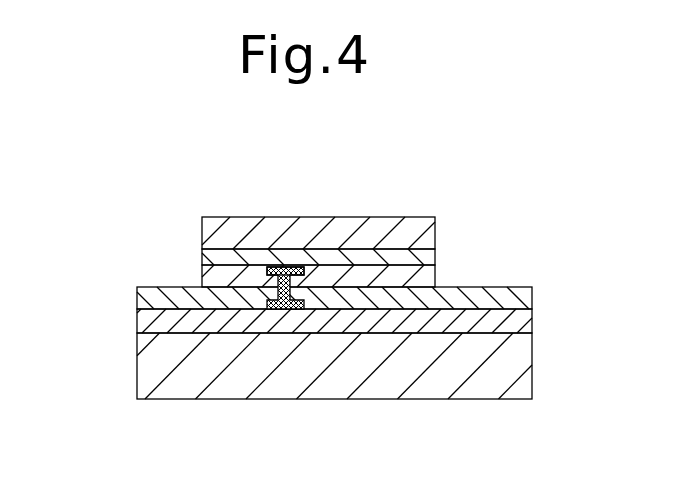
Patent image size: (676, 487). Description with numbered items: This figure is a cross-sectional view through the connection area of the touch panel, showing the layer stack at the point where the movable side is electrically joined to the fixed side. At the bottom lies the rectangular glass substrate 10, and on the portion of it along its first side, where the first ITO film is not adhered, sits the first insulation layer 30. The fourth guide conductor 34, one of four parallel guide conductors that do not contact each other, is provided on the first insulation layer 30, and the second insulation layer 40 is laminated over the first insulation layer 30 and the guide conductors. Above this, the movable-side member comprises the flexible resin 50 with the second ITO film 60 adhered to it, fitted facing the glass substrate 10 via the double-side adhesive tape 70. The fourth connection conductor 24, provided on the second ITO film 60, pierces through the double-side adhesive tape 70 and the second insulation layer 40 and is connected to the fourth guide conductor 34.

The glass substrate 10 is at (150, 372).
The first insulation layer 30 is at (143, 320).
The second insulation layer 40 is at (148, 298).
The double-side adhesive tape 70 is at (203, 275).
The second ITO film 60 is at (203, 250).
The flexible resin 50 is at (203, 219).
The fourth connection conductor 24 is at (295, 266).
The fourth guide conductor 34 is at (283, 310).